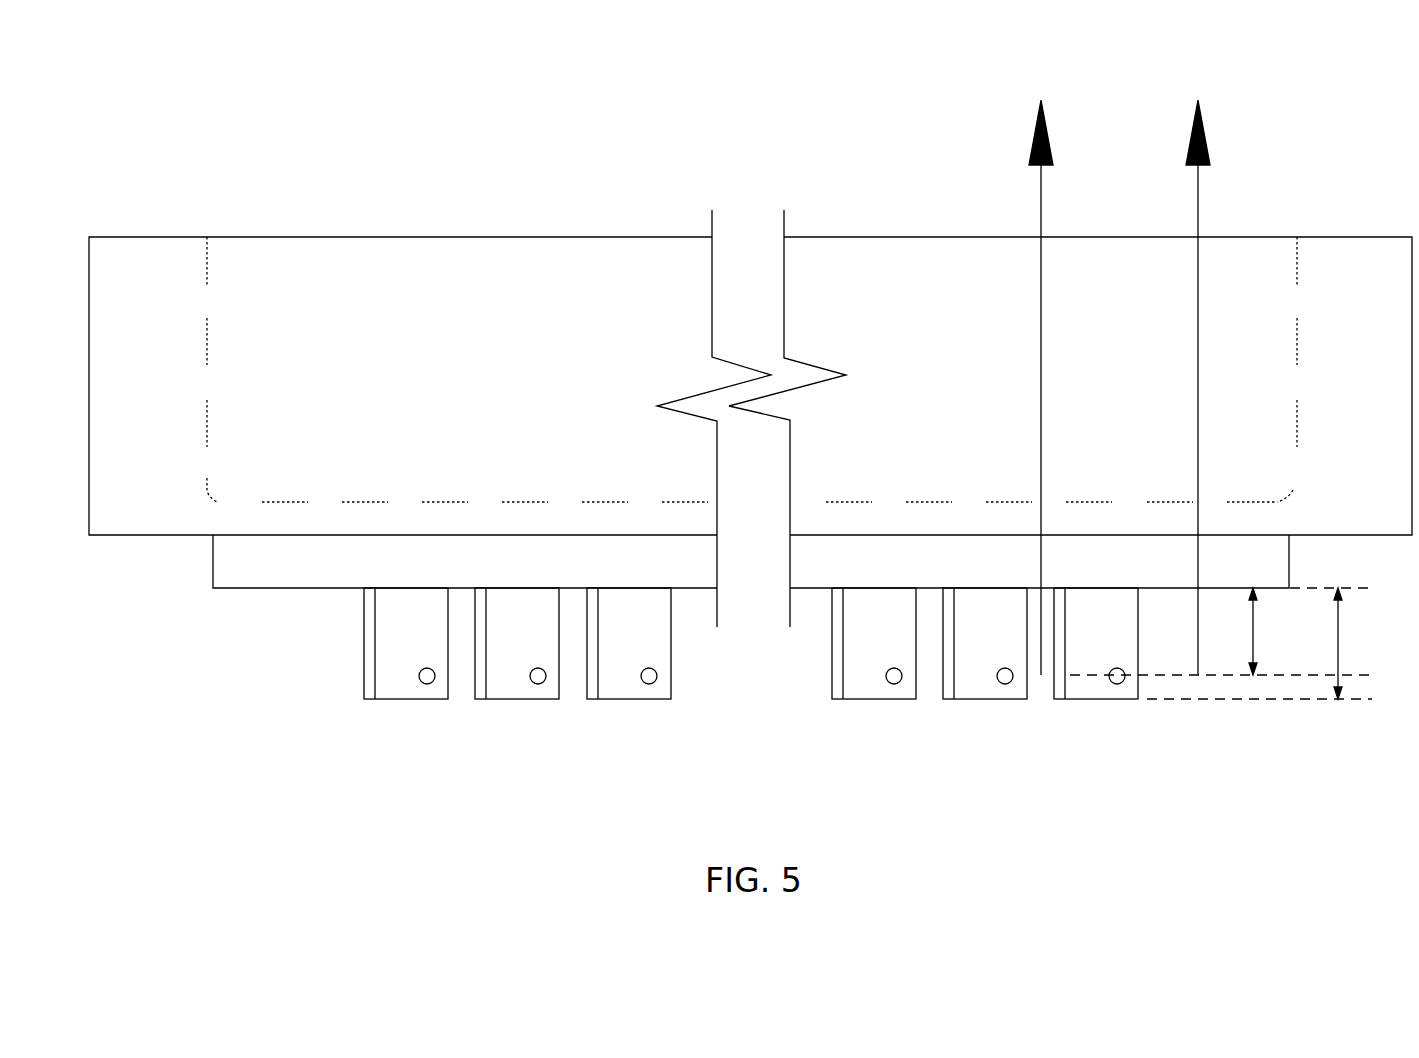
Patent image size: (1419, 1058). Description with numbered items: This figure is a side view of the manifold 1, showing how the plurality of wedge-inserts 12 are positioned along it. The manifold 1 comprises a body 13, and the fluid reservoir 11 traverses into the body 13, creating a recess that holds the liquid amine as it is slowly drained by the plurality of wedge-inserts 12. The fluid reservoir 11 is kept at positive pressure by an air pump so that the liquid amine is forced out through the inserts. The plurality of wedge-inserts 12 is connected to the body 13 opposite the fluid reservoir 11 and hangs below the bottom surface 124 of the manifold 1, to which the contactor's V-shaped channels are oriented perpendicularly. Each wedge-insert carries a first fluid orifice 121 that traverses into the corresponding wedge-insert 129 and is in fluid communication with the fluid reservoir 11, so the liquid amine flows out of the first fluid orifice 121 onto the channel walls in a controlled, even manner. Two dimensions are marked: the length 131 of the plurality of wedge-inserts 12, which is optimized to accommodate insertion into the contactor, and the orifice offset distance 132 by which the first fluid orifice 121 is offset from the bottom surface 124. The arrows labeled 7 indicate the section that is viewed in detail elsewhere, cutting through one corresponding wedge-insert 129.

The manifold 1 is at (407, 173).
The fluid reservoir 11 is at (508, 290).
The plurality of wedge-inserts 12 is at (408, 692).
The first fluid orifice 121 is at (430, 668).
The bottom surface 124 is at (228, 592).
The corresponding wedge-insert 129 is at (1097, 694).
The body 13 is at (153, 245).
The length 131 is at (1338, 630).
The orifice offset distance 132 is at (1253, 630).
The section line 7- 7 is at (1120, 364).